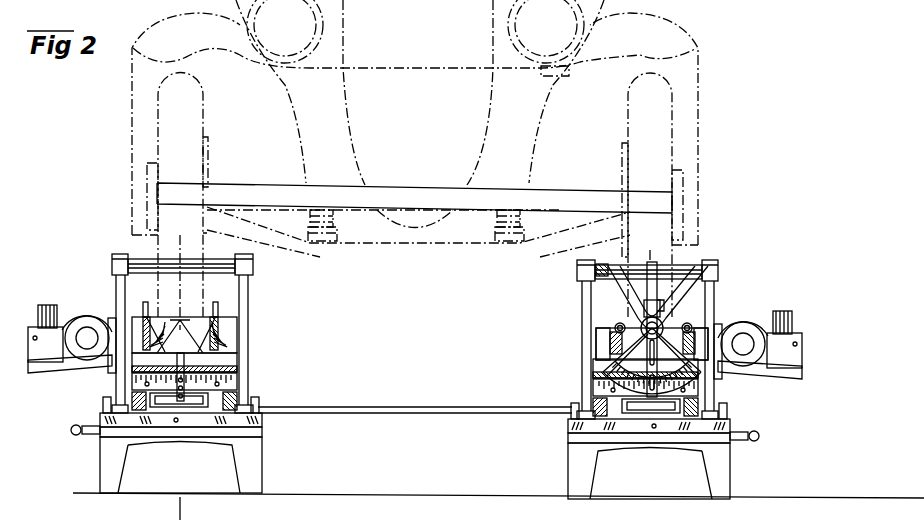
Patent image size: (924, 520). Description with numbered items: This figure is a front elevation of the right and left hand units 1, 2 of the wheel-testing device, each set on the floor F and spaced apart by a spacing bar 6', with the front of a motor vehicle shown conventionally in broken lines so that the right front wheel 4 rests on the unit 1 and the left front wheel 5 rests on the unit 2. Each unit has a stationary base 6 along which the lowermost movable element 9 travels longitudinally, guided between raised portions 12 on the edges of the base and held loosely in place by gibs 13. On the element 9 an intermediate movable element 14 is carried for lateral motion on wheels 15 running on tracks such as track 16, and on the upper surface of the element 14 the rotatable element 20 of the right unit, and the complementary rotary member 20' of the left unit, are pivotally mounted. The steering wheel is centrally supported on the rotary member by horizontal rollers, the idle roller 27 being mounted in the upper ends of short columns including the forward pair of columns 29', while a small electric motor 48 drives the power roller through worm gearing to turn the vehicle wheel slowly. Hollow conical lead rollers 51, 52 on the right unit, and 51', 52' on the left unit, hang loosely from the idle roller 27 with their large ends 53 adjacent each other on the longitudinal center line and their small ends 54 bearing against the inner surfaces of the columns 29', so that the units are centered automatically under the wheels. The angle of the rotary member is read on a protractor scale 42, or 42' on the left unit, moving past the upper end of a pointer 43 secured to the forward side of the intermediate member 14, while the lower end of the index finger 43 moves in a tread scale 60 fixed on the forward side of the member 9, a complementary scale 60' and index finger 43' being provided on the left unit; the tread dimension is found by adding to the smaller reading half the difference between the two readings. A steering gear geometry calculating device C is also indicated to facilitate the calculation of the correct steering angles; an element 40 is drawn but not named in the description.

The right front wheel 4 is at (203, 127).
The left front wheel 5 is at (622, 128).
The track 16 is at (168, 246).
The small ends 54 is at (145, 318).
The electric motor 48 is at (75, 337).
The short columns 29' is at (435, 316).
The lead roller 51 is at (150, 294).
The lead roller 52 is at (216, 294).
The roller 27 is at (182, 337).
The large ends 53 is at (181, 336).
The protractor scale 42 is at (232, 359).
The protractor scale 42' is at (606, 371).
The intermediate movable element 14 is at (230, 383).
The gibs 13 is at (265, 407).
The raised portions 12 is at (258, 414).
The lowermost movable element 9 is at (104, 398).
The stationary base 6 is at (415, 468).
The right hand unit 1 is at (172, 468).
The left hand unit 2 is at (655, 474).
The knob 40 is at (93, 437).
The scale 60 is at (184, 432).
The pointer 43 is at (179, 439).
The scale 60' is at (645, 441).
The index finger 43' is at (639, 443).
The rotatable element 20 is at (70, 377).
The rotary member 20' is at (763, 384).
The lead roller 51' is at (631, 299).
The lead roller 52' is at (720, 313).
The wheels 15 is at (561, 325).
The steering gear geometry calculating device C is at (630, 360).
The spacing bars 6' is at (415, 396).
The floor F is at (355, 495).